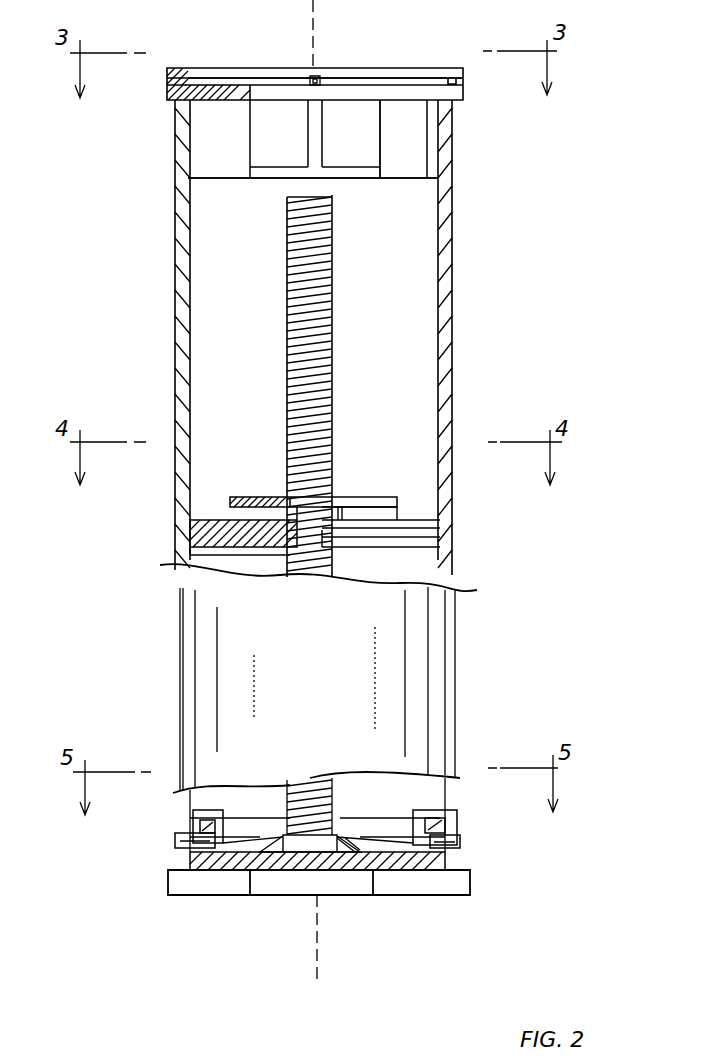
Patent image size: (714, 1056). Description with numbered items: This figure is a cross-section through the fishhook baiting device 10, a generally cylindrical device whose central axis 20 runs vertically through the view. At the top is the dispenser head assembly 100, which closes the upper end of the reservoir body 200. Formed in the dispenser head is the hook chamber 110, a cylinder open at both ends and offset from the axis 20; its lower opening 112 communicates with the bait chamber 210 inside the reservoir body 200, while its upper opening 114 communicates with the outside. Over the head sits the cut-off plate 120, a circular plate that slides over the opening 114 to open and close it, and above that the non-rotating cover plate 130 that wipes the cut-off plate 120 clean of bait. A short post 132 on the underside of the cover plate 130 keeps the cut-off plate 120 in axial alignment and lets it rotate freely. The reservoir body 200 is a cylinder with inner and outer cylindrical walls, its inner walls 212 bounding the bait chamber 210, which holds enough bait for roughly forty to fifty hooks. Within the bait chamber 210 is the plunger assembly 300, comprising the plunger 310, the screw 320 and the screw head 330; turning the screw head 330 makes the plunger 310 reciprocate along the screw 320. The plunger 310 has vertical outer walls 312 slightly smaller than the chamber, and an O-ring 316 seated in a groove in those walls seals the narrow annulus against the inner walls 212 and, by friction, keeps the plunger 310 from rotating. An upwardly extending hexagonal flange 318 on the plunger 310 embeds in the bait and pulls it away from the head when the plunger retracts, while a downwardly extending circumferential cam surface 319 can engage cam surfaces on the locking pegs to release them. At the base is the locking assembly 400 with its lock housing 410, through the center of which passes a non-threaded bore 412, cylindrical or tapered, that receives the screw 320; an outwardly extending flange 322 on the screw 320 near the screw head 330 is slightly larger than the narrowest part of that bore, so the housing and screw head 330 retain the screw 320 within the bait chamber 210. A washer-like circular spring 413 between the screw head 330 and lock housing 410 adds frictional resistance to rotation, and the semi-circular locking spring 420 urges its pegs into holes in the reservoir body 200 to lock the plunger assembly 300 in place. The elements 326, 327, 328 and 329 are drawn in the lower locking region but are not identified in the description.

The fishhook baiting device 10 is at (541, 296).
The axis 20 is at (317, 34).
The dispenser head assembly 100 is at (166, 117).
The hook chamber 110 is at (400, 135).
The opening 112 is at (400, 183).
The opening 114 is at (412, 120).
The cut-off plate 120 is at (228, 78).
The cover plate 130 is at (368, 76).
The post 132 is at (310, 78).
The reservoir body 200 is at (177, 272).
The bait chamber 210 is at (400, 338).
The inner walls 212 is at (194, 318).
The plunger assembly 300 is at (224, 912).
The plunger 310 is at (200, 546).
The outer walls 312 is at (440, 509).
The O-ring 316 is at (440, 540).
The hexagonal flange 318 is at (390, 497).
The cam surface 319 is at (185, 568).
The screw 320 is at (315, 398).
The outwardly extending flange 322 is at (285, 790).
The left clip 326 is at (183, 818).
The right clip 327 is at (445, 816).
The left bracket 328 is at (190, 792).
The support plate 329 is at (385, 800).
The screw head 330 is at (433, 885).
The locking assembly 400 is at (157, 860).
The lock housing 410 is at (445, 785).
The non-threaded bore 412 is at (300, 853).
The circular spring 413 is at (352, 848).
The locking spring 420 is at (462, 842).